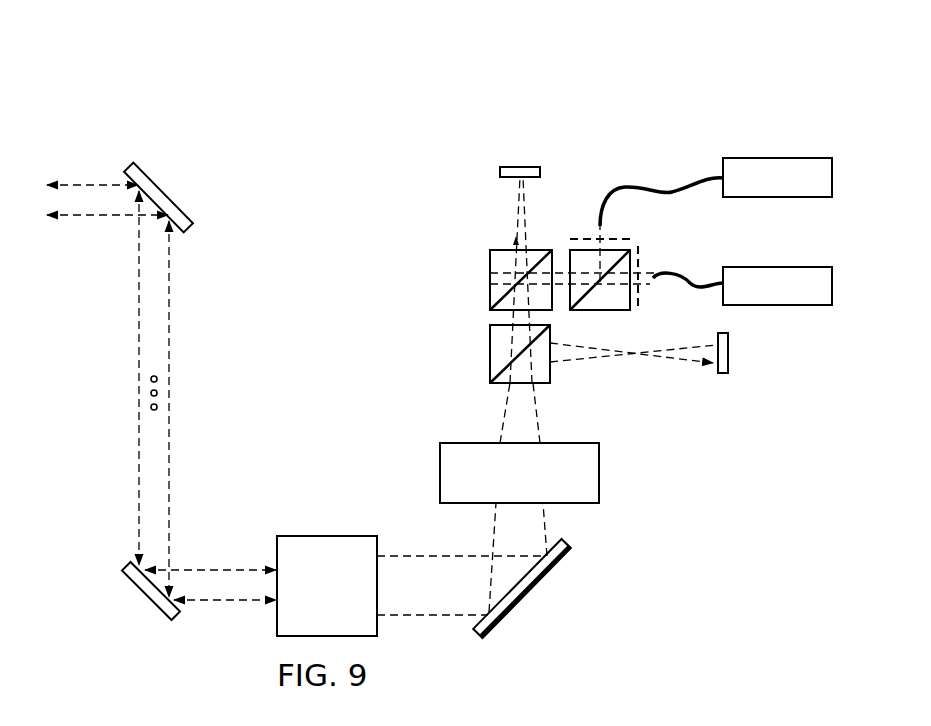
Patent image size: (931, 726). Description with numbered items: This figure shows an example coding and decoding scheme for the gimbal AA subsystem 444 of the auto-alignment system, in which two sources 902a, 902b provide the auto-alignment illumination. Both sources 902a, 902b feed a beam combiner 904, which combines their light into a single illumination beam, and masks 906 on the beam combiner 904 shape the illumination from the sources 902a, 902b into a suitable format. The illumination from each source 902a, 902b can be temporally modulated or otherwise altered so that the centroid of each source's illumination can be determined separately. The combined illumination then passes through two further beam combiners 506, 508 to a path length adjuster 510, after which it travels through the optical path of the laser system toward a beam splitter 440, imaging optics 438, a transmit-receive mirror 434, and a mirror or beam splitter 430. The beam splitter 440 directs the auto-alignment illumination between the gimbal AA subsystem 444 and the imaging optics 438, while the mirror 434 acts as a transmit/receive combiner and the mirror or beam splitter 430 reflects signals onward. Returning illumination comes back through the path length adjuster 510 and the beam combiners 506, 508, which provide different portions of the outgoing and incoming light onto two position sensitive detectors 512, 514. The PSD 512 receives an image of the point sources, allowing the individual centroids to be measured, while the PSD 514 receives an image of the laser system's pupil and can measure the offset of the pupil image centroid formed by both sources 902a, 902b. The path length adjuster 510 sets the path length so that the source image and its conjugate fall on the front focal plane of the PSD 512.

The mirror or beam splitter 430 is at (160, 191).
The transmit-receive mirror 434 is at (147, 594).
The imaging optics 438 is at (328, 535).
The beam splitter 440 is at (523, 596).
The gimbal AA subsystem 444 is at (653, 88).
The beam combiner 506 is at (490, 280).
The beam combiner 508 is at (490, 354).
The path length adjuster 510 is at (599, 473).
The position sensitive detector 512 is at (500, 170).
The position sensitive detector 514 is at (722, 373).
The beam combiner 904 is at (583, 233).
The masks 906 is at (657, 262).
The source 902a is at (780, 157).
The source 902b is at (778, 305).